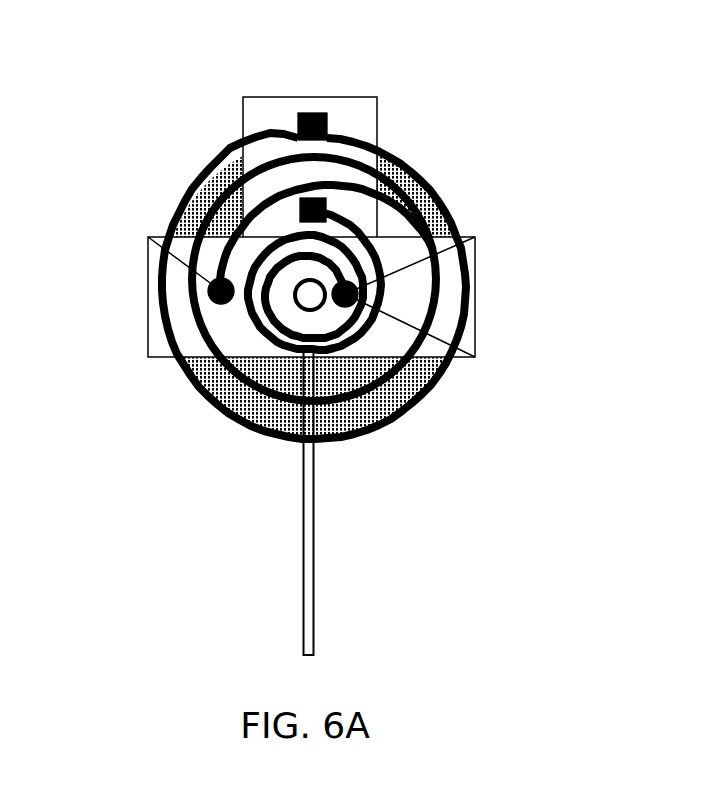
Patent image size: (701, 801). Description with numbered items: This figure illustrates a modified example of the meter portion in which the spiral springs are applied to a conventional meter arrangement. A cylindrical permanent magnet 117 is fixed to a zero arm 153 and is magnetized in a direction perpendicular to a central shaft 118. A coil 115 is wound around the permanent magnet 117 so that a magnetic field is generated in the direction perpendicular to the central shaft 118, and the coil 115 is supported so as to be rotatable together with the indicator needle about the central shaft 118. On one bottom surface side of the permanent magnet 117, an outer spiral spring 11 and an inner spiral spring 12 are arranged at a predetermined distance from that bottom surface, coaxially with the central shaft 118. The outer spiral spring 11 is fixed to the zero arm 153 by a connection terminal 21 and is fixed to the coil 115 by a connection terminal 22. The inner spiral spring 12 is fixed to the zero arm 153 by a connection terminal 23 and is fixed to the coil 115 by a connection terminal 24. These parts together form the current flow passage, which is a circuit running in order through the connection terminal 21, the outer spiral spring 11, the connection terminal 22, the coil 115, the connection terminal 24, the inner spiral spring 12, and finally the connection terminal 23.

The outer spiral spring 11 is at (195, 397).
The inner spiral spring 12 is at (380, 340).
The connection terminal 21 is at (327, 124).
The connection terminal 22 is at (208, 296).
The connection terminal 23 is at (328, 204).
The connection terminal 24 is at (357, 293).
The coil 115 is at (478, 310).
The permanent magnet 117 is at (380, 405).
The central shaft 118 is at (306, 304).
The zero arm 153 is at (252, 96).